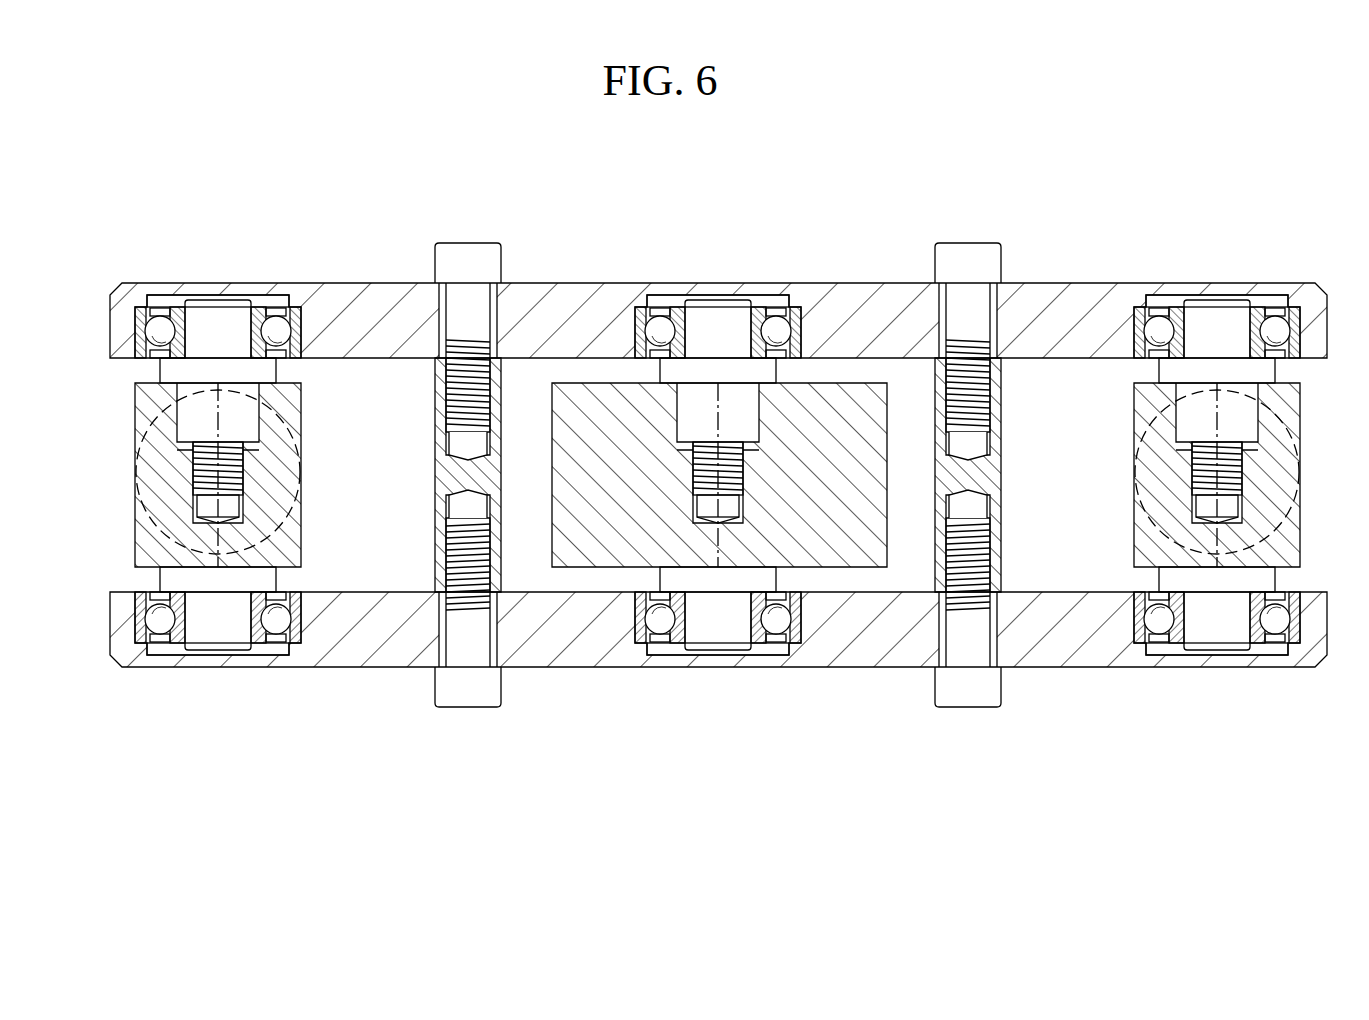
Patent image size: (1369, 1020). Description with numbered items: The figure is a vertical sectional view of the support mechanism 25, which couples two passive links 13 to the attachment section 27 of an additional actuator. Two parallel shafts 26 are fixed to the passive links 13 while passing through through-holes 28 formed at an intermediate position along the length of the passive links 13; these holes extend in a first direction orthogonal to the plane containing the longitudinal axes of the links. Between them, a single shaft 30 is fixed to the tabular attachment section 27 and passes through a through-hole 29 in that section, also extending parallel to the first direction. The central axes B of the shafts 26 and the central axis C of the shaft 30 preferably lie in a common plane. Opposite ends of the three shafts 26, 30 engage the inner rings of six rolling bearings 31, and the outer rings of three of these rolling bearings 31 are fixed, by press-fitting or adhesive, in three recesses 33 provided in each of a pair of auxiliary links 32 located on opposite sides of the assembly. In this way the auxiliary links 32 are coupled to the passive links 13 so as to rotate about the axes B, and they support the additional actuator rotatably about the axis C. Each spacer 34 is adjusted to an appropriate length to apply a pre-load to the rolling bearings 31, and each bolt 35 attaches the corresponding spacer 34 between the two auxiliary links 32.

The support mechanism 25 is at (76, 196).
The passive link 13 is at (178, 430).
The shaft 26 is at (223, 657).
The attachment section 27 is at (850, 567).
The through-hole 28 is at (190, 546).
The through-hole 29 is at (740, 540).
The shaft 30 is at (723, 657).
The rolling bearing 31 is at (300, 312).
The auxiliary link 32 is at (561, 270).
The recess 33 is at (170, 298).
The spacer 34 is at (435, 485).
The bolt 35 is at (468, 243).
The central axis B is at (296, 430).
The central axis C is at (718, 408).